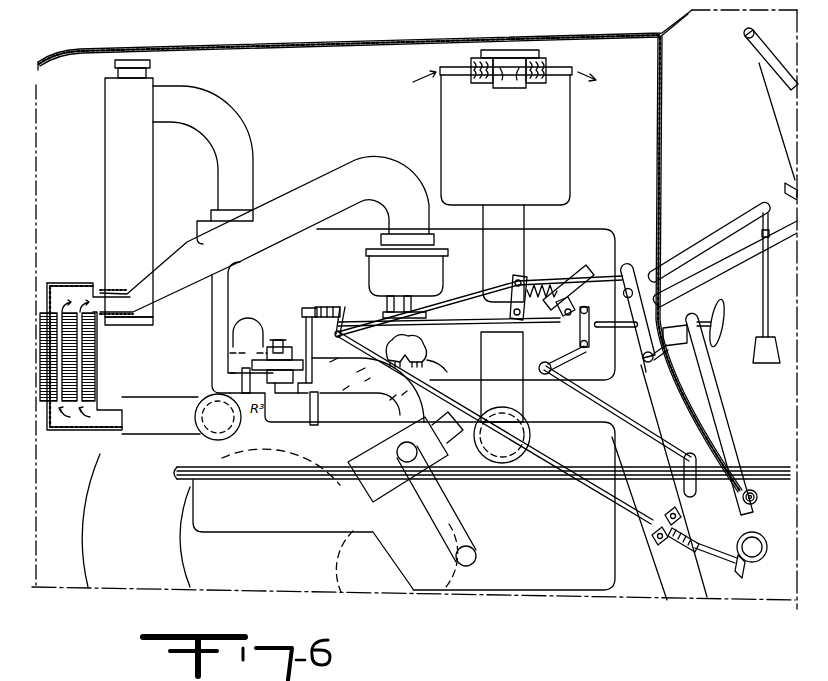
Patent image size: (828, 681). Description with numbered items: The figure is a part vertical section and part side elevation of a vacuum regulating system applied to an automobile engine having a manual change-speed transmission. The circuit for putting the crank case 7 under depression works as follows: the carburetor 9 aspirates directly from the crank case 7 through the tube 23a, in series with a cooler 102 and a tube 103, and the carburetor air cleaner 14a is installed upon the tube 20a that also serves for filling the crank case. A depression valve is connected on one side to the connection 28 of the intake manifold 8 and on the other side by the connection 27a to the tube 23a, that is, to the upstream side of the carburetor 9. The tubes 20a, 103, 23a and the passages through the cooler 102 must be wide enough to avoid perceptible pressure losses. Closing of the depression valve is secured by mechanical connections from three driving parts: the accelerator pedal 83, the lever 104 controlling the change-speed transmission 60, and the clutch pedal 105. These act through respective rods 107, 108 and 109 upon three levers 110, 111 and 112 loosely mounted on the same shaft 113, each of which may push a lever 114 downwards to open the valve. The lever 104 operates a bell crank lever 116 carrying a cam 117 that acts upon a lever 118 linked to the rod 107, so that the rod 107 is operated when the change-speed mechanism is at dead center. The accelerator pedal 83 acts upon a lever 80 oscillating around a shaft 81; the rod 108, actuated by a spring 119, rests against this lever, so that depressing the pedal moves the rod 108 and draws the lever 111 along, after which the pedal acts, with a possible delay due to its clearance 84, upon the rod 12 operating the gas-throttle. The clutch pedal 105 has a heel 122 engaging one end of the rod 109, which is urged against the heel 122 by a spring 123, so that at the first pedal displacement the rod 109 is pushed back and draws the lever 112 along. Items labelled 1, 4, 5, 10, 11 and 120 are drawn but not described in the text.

The hood 1 is at (242, 46).
The operator compartment 4 is at (722, 153).
The hood wall / dash panel 5 is at (666, 190).
The crank case 7 is at (196, 463).
The intake manifold 8 is at (479, 354).
The carburetor 9 is at (440, 271).
The carburetor outlet stub 10 is at (392, 301).
The carburetor outlet stub 11 is at (411, 302).
The rod 12 is at (454, 324).
The air cleaner 14a is at (567, 166).
The tube 20a is at (524, 225).
The tube 23a is at (316, 178).
The connection 27a is at (224, 297).
The connection 28 is at (337, 420).
The change-speed transmission 60 is at (785, 502).
The lever 80 is at (642, 360).
The shaft 81 is at (634, 272).
The accelerator pedal 83 is at (722, 390).
The clearance 84 is at (633, 333).
The cooler 102 is at (96, 359).
The tube 103 is at (177, 434).
The lever 104 is at (753, 355).
The clutch pedal 105 is at (723, 318).
The rod 107 is at (562, 268).
The rod 108 is at (492, 300).
The rod 109 is at (555, 439).
The lever 110 is at (308, 304).
The lever 111 is at (343, 312).
The lever 112 is at (330, 302).
The shaft 113 is at (343, 324).
The lever 114 is at (306, 313).
The bell crank lever 116 is at (581, 360).
The cam 117 is at (588, 324).
The lever 118 is at (562, 312).
The spring 119 is at (528, 280).
The regulator valve 120 is at (300, 328).
The heel 122 is at (740, 569).
The spring 123 is at (685, 544).